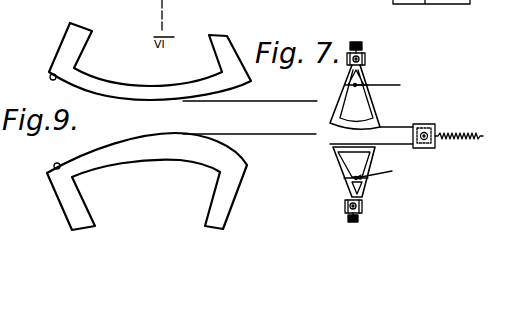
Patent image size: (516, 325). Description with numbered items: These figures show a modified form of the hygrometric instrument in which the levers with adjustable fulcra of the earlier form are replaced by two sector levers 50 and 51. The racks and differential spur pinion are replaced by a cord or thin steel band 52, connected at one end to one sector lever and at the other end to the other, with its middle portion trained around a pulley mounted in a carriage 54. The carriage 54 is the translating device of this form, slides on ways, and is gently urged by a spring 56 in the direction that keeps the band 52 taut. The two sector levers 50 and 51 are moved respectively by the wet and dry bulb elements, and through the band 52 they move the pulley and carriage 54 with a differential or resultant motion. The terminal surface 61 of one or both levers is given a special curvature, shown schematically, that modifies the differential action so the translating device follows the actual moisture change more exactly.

In FIG. 9, the sector lever 50 is at (123, 81).
In FIG. 7, the sector lever 50 is at (371, 102).
In FIG. 9, the sector lever 51 is at (138, 162).
In FIG. 7, the sector lever 51 is at (365, 185).
In FIG. 9, the cord or thin steel band 52 is at (266, 134).
In FIG. 7, the cord or thin steel band 52 is at (403, 144).
In FIG. 7, the carriage 54 is at (428, 148).
In FIG. 7, the spring 56 is at (466, 128).
In FIG. 7, the terminal surface 61 is at (382, 127).